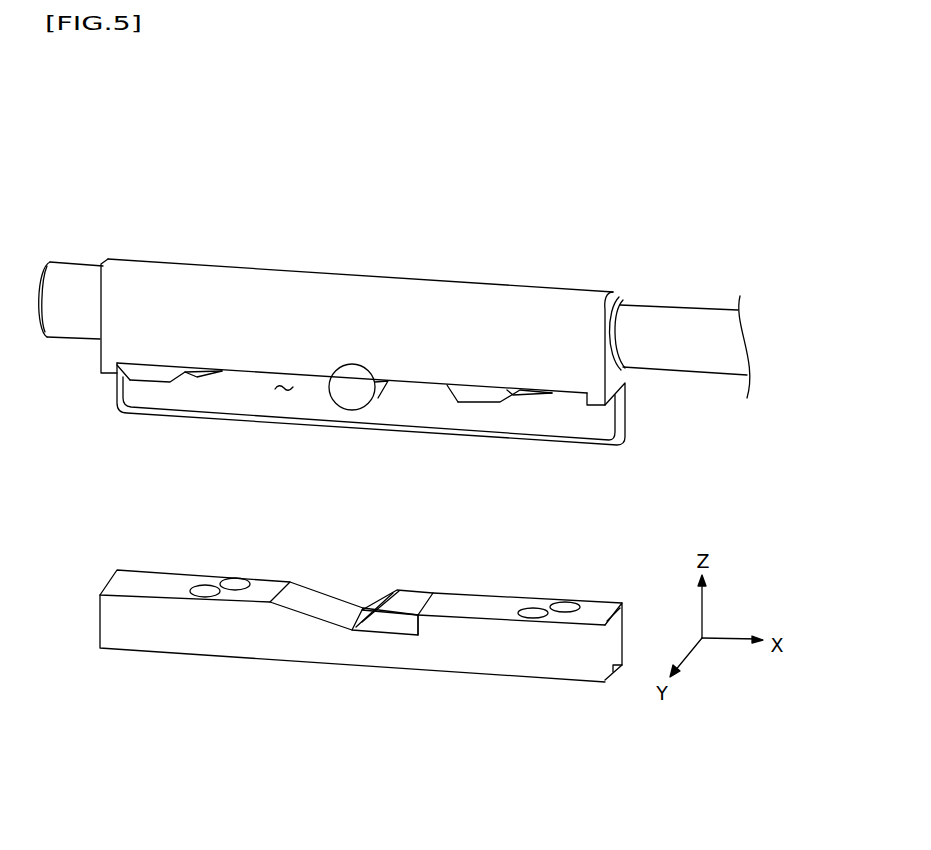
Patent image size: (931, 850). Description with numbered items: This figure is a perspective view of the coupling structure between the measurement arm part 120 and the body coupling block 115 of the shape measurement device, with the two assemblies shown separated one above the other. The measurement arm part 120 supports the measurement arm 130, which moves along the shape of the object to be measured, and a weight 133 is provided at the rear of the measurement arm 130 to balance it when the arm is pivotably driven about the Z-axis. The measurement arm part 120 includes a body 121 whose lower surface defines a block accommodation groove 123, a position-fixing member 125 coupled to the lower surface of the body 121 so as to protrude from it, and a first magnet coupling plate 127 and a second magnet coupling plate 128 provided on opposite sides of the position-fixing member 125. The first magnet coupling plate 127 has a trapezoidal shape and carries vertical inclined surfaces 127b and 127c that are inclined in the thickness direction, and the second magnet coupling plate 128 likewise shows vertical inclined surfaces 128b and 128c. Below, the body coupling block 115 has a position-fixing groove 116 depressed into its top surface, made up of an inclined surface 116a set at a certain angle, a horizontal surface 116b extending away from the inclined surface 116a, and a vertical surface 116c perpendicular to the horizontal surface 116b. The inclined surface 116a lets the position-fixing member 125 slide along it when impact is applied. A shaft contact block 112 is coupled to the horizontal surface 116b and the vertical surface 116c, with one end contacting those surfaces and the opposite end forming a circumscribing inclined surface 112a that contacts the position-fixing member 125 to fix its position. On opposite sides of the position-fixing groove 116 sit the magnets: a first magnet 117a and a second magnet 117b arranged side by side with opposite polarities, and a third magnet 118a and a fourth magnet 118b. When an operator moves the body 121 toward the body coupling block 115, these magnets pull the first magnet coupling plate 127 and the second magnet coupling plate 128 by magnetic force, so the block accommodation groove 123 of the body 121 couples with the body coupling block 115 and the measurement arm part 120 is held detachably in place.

The measurement arm part 120 is at (391, 212).
The body 121 is at (203, 283).
The block accommodation groove 123 is at (287, 388).
The position-fixing member 125 is at (352, 380).
The weight 133 is at (73, 278).
The measurement arm 130 is at (673, 320).
The second magnet coupling plate 128 is at (157, 372).
The vertical inclined surface 128b is at (192, 374).
The vertical inclined surface 128c is at (120, 380).
The first magnet coupling plate 127 is at (477, 393).
The vertical inclined surface 127b is at (527, 395).
The vertical inclined surface 127c is at (448, 392).
The body coupling block 115 is at (220, 632).
The position-fixing groove 116 is at (482, 740).
The inclined surface 116a is at (323, 608).
The horizontal surface 116b is at (400, 634).
The vertical surface 116c is at (420, 624).
The shaft contact block 112 is at (410, 593).
The circumscribing inclined surface 112a is at (377, 605).
The first magnet 117a is at (565, 607).
The second magnet 117b is at (533, 613).
The third magnet 118a is at (237, 584).
The fourth magnet 118b is at (205, 591).